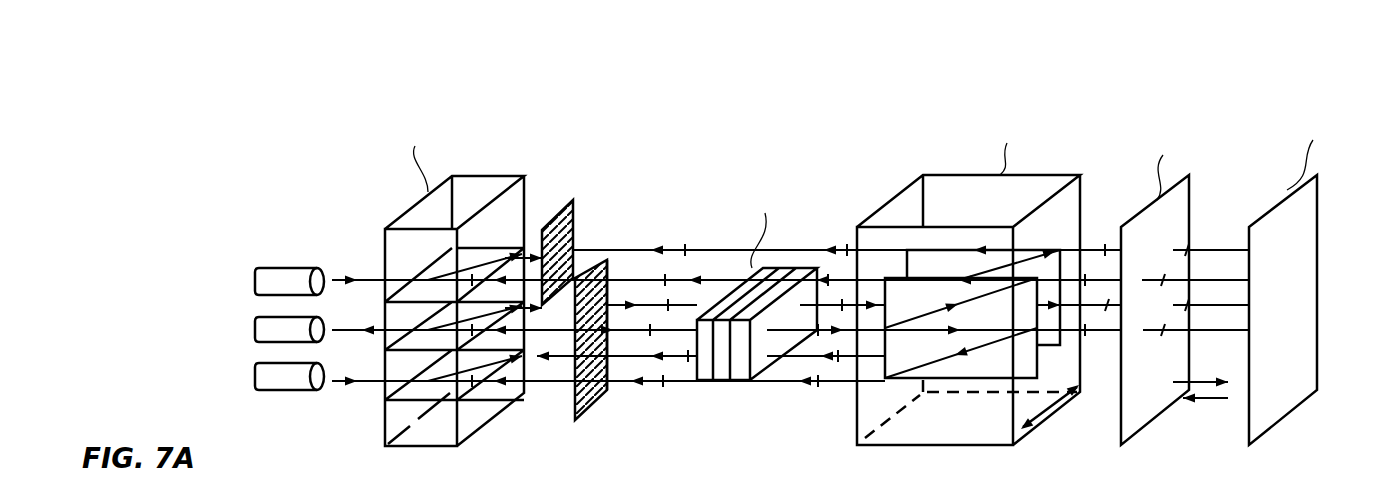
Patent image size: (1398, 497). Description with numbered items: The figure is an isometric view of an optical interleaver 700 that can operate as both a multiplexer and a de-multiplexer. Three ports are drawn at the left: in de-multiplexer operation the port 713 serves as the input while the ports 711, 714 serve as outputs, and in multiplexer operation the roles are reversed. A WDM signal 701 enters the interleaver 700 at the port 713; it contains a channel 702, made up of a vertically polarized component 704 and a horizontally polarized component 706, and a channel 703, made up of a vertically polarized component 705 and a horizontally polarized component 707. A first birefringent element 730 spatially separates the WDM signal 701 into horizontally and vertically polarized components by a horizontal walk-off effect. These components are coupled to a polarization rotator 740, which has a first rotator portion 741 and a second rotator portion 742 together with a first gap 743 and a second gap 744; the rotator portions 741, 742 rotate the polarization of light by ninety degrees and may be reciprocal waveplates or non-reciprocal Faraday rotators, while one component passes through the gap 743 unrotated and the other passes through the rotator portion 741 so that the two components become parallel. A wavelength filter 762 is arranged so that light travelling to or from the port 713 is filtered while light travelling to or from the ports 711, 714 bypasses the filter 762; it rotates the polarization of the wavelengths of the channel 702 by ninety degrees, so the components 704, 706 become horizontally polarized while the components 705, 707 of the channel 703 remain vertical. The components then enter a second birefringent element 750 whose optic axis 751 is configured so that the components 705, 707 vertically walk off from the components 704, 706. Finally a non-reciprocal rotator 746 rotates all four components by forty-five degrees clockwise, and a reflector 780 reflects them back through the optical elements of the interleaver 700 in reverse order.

The optical interleaver 700 is at (289, 130).
The WDM signal 701 is at (362, 328).
The channel 702 is at (360, 380).
The channel 703 is at (354, 276).
The vertically polarized component 704 is at (792, 383).
The vertically polarized component 705 is at (712, 268).
The horizontally polarized component 706 is at (831, 365).
The horizontally polarized component 707 is at (681, 246).
The port 711 is at (252, 288).
The port 713 is at (254, 343).
The port 714 is at (255, 391).
The first birefringent element 730 is at (411, 210).
The polarization rotator 740 is at (587, 160).
The first rotator portion 741 is at (608, 398).
The second rotator portion 742 is at (559, 203).
The first gap 743 is at (565, 400).
The second gap 744 is at (602, 240).
The non-reciprocal rotator 746 is at (1192, 205).
The second birefringent element 750 is at (922, 446).
The optic axis 751 is at (1060, 412).
The wavelength filter 762 is at (723, 383).
The reflector 780 is at (1317, 195).